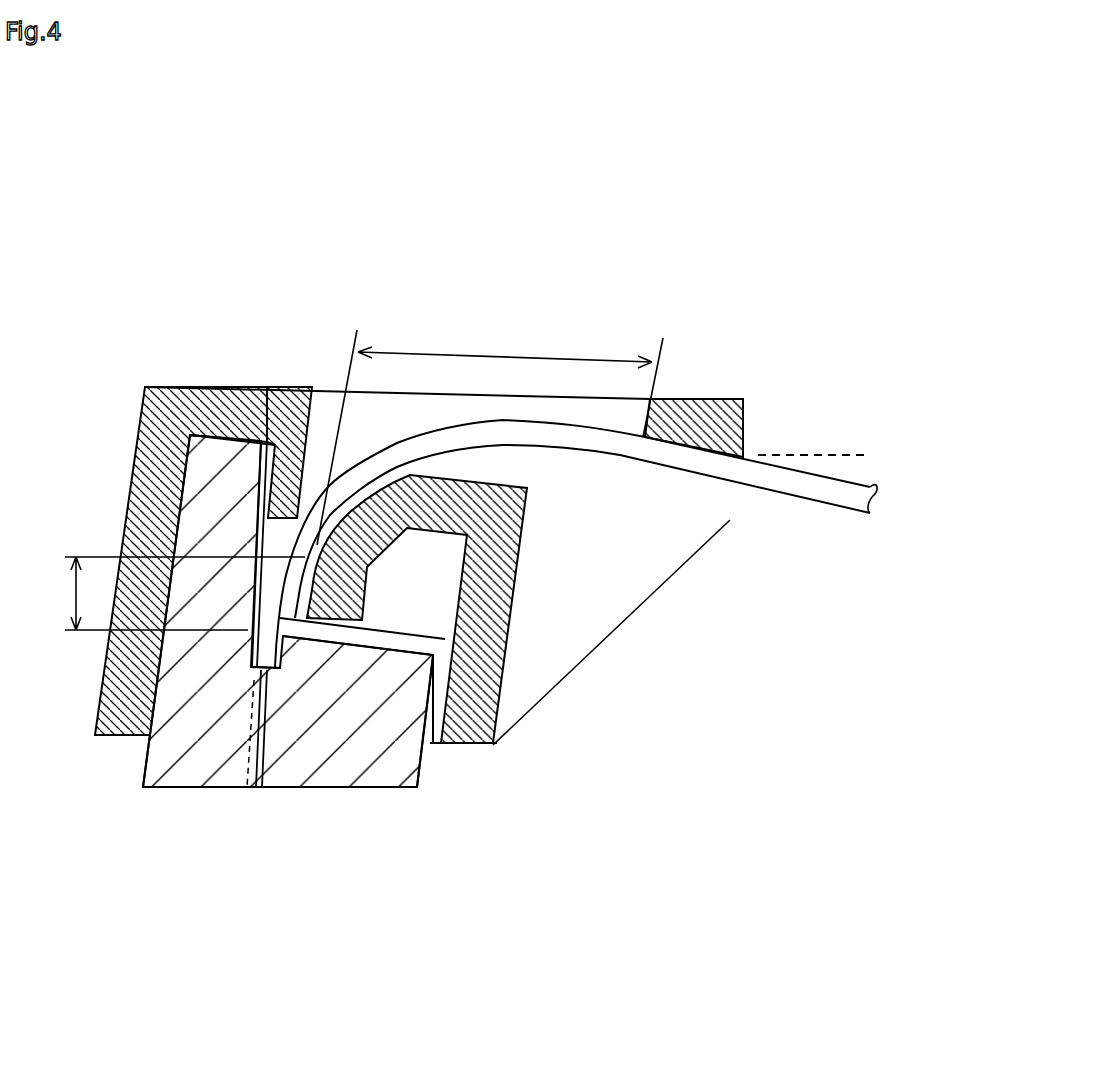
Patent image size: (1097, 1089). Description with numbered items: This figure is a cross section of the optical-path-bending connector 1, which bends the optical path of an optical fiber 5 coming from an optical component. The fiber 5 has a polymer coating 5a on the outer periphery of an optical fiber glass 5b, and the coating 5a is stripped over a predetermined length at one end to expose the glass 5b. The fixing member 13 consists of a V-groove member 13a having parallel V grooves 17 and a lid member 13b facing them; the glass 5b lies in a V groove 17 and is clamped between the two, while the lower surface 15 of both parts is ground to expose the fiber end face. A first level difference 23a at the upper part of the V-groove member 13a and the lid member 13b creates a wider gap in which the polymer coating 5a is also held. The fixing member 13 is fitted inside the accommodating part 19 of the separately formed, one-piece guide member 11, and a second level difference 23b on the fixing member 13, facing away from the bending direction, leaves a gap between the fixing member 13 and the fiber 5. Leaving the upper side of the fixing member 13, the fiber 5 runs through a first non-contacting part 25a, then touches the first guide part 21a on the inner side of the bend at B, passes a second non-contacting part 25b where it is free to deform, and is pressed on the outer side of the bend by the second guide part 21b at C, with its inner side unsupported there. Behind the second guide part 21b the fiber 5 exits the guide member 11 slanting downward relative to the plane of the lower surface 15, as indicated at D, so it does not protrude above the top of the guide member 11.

The optical-path-bending connector 1 is at (581, 172).
The optical fiber 5 is at (697, 460).
The polymer coating 5a is at (273, 649).
The optical fiber glass 5b is at (398, 678).
The guide member 11 is at (228, 388).
The fixing member 13 is at (272, 390).
The V-groove member 13a is at (232, 787).
The lid member 13b is at (310, 787).
The lower surface 15 is at (190, 787).
The V groove 17 is at (260, 787).
The accommodating part 19 is at (192, 388).
The first guide part 21a is at (367, 525).
The second guide part 21b is at (745, 399).
The first level difference 23a is at (172, 787).
The second level difference 23b is at (250, 567).
The first non-contacting part 25a is at (76, 600).
The second non-contacting part 25b is at (403, 352).
The contact point at first guide part B is at (337, 573).
The contact point at second guide part C is at (652, 399).
The slanted lead-out direction D is at (822, 455).